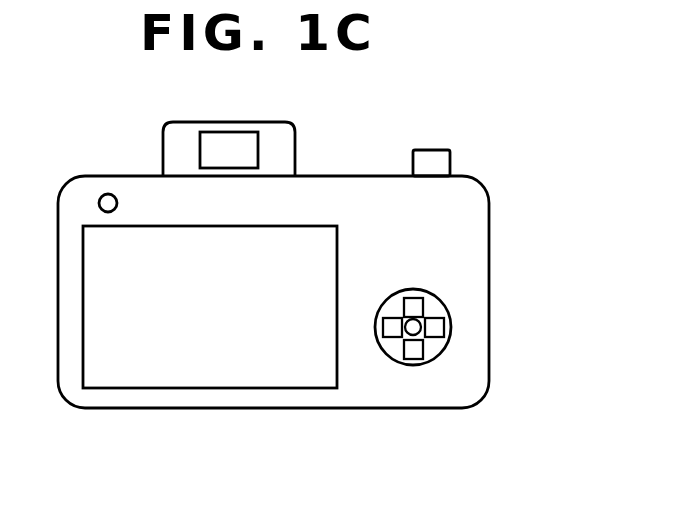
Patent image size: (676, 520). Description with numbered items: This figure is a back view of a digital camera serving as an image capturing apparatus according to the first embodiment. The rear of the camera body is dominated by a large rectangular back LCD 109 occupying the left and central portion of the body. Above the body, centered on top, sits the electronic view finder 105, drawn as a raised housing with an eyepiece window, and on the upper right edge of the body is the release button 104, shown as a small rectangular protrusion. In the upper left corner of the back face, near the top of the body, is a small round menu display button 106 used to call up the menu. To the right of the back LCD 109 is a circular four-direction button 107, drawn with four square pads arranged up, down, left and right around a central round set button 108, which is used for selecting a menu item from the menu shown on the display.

The release button 104 is at (428, 150).
The electronic view finder 105 is at (226, 122).
The menu display button 106 is at (108, 194).
The four-direction button 107 is at (451, 327).
The set button 108 is at (420, 321).
The back LCD 109 is at (337, 247).